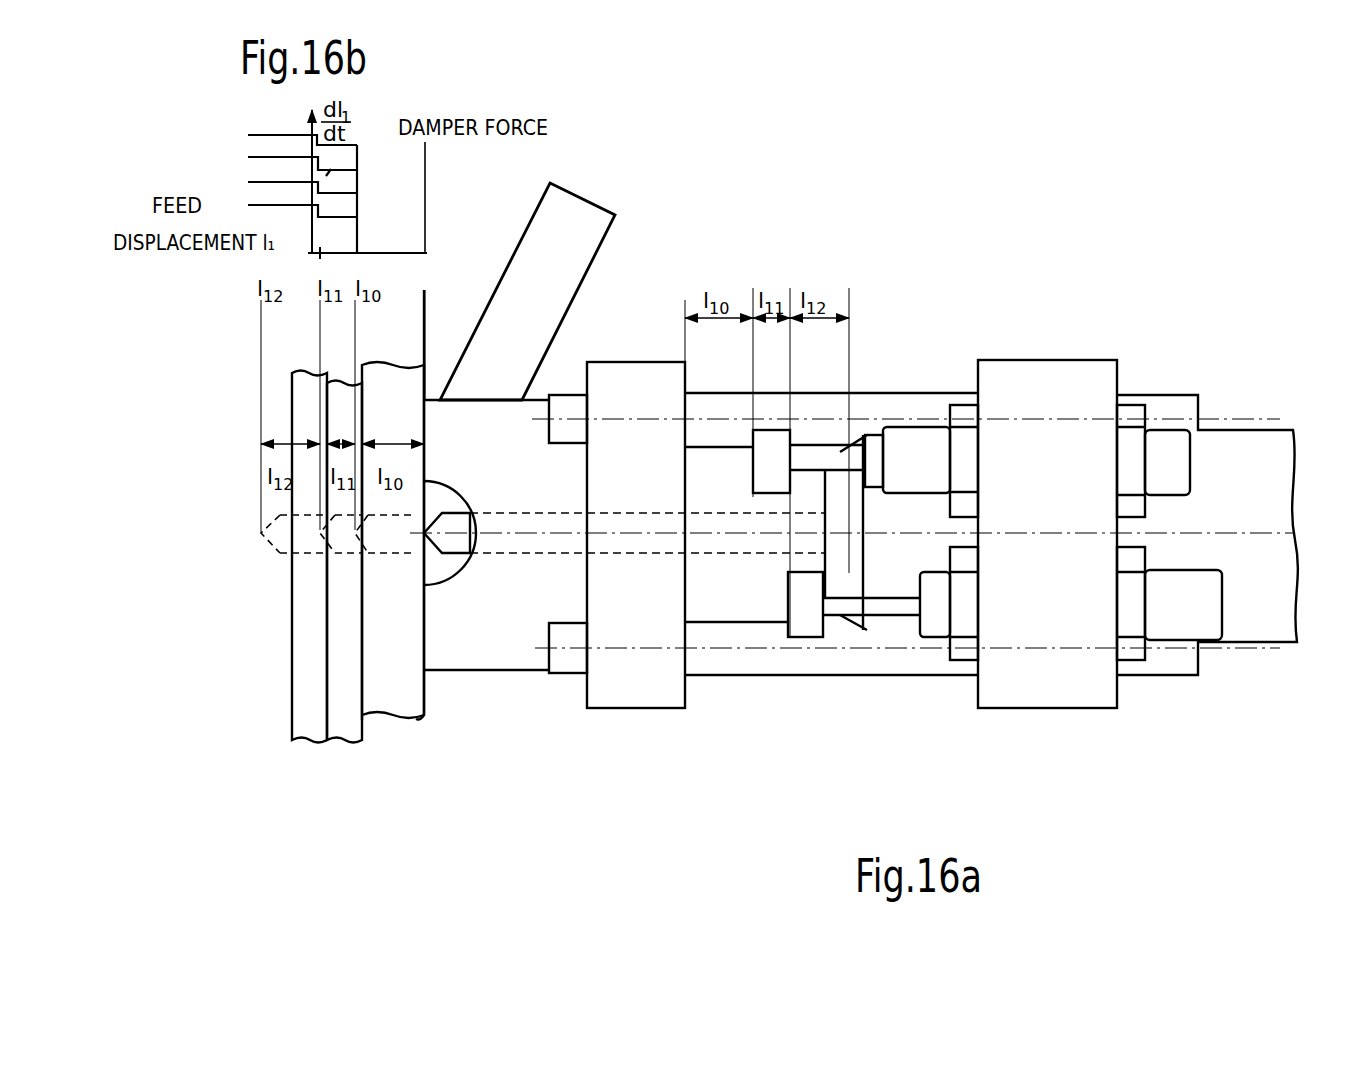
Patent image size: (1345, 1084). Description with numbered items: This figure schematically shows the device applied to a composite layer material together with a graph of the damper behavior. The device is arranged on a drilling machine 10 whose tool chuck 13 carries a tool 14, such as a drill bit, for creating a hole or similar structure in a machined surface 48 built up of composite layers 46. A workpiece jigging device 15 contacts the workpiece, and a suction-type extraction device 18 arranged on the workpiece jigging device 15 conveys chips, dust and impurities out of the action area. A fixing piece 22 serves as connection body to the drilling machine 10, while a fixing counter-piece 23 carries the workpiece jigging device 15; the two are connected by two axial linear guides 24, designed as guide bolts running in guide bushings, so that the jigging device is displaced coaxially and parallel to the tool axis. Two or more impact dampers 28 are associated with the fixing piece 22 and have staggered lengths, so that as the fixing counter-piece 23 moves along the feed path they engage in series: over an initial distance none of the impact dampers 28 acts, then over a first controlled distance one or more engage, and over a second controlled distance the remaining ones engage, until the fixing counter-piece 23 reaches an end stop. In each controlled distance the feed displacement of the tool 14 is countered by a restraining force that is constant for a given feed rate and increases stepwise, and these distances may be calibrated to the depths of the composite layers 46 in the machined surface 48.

The drilling machine 10 is at (1248, 615).
The tool chuck 13 is at (855, 488).
The tool 14 is at (722, 542).
The workpiece jigging device 15 is at (465, 643).
The suction-type extraction device 18 is at (555, 245).
The fixing piece 22 is at (1072, 390).
The fixing counter-piece 23 is at (683, 693).
The axial linear guide 24 is at (839, 665).
The impact damper 28 is at (922, 463).
The composite layers 46 is at (308, 693).
The machined surface 48 is at (428, 723).